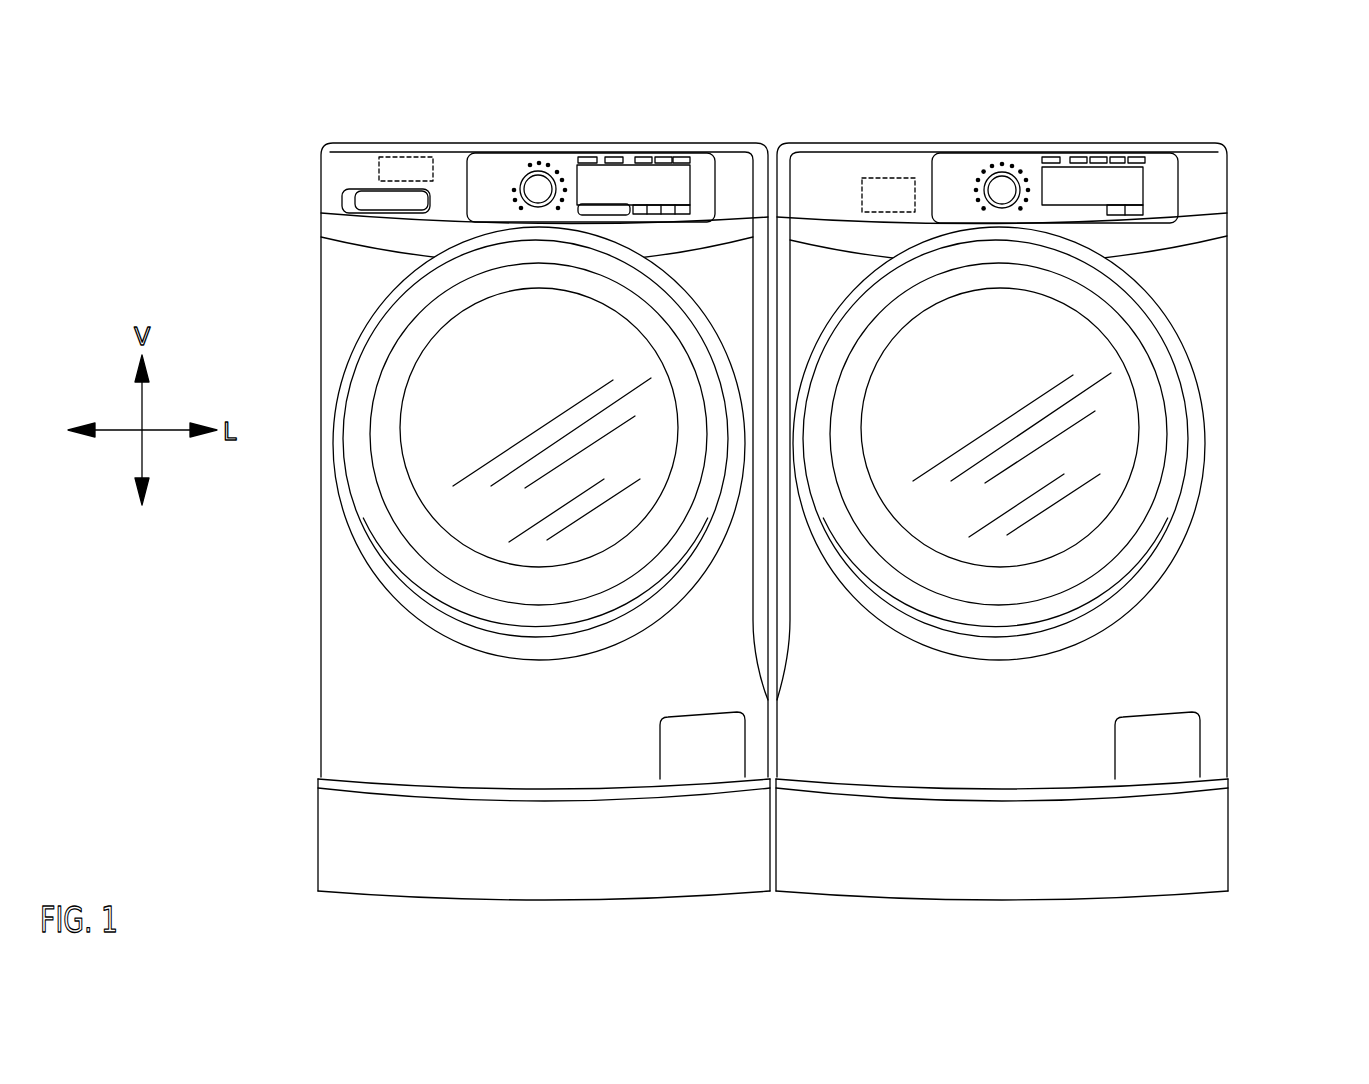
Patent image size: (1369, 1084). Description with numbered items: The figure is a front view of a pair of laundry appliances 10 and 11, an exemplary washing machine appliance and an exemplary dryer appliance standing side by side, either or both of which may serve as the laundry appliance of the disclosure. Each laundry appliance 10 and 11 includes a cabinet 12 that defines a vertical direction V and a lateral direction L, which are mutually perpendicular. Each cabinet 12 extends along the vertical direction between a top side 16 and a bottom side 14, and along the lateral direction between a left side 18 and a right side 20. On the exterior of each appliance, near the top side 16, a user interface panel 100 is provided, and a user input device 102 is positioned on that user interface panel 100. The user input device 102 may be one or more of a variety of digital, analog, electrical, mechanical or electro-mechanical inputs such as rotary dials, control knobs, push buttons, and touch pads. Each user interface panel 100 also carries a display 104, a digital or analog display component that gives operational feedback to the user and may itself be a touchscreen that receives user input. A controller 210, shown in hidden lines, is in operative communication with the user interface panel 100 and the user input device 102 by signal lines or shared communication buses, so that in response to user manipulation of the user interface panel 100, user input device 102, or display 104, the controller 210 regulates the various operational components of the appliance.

The laundry appliance 10 is at (190, 108).
The laundry appliance 11 is at (1250, 182).
The cabinet 12 is at (335, 656).
The bottom side 14 is at (395, 915).
The top side 16 is at (383, 137).
The left side 18 is at (300, 822).
The right side 20 is at (1240, 852).
The user interface panel 100 is at (567, 170).
The user input device 102 is at (531, 190).
The display component 104 is at (678, 192).
The controller 210 is at (418, 157).